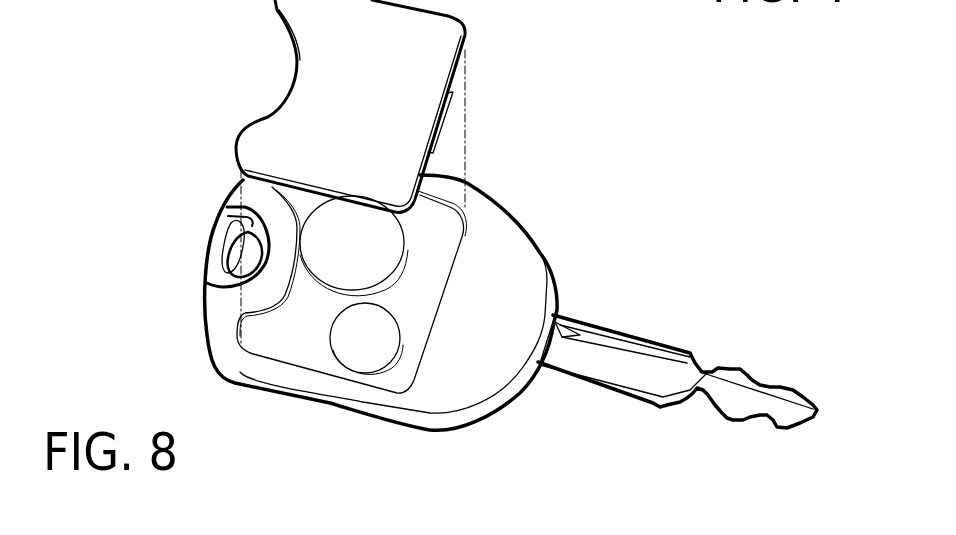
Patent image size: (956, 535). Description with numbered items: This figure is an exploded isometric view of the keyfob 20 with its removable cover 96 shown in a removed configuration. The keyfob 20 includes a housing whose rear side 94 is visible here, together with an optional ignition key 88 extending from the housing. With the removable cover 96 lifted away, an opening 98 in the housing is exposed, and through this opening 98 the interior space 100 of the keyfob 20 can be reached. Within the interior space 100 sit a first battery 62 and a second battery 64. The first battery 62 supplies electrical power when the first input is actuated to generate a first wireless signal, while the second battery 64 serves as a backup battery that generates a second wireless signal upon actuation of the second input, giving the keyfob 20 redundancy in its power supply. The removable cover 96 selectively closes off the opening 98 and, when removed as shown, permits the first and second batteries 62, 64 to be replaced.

The keyfob 20 is at (552, 244).
The first battery 62 is at (383, 248).
The second battery 64 is at (366, 360).
The ignition key 88 is at (660, 343).
The rear side 94 is at (520, 285).
The removable cover 96 is at (432, 28).
The opening 98 is at (292, 358).
The interior space 100 is at (258, 330).